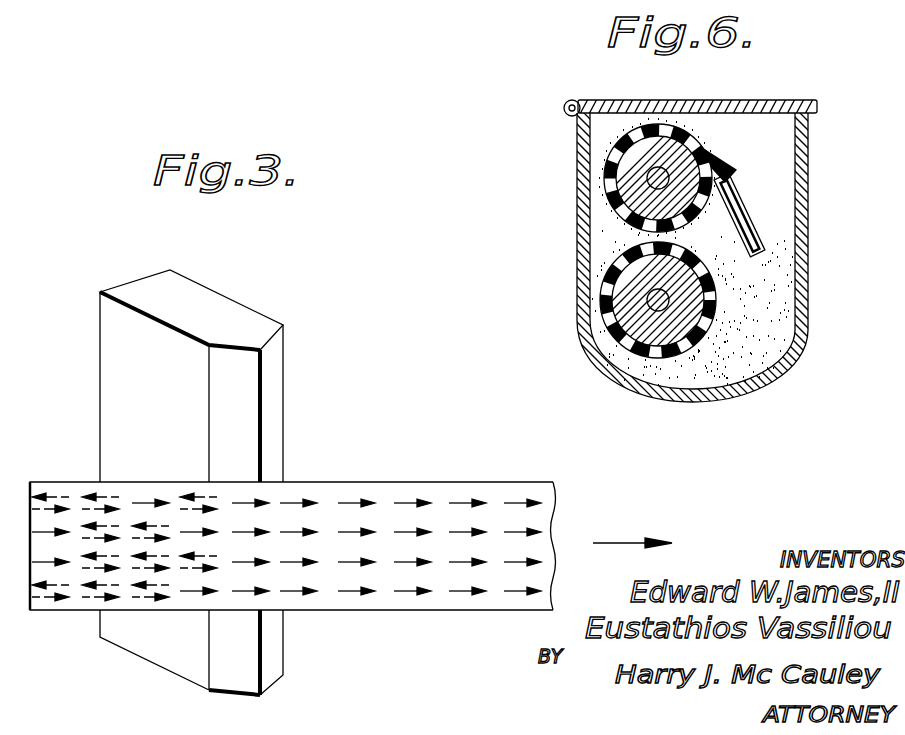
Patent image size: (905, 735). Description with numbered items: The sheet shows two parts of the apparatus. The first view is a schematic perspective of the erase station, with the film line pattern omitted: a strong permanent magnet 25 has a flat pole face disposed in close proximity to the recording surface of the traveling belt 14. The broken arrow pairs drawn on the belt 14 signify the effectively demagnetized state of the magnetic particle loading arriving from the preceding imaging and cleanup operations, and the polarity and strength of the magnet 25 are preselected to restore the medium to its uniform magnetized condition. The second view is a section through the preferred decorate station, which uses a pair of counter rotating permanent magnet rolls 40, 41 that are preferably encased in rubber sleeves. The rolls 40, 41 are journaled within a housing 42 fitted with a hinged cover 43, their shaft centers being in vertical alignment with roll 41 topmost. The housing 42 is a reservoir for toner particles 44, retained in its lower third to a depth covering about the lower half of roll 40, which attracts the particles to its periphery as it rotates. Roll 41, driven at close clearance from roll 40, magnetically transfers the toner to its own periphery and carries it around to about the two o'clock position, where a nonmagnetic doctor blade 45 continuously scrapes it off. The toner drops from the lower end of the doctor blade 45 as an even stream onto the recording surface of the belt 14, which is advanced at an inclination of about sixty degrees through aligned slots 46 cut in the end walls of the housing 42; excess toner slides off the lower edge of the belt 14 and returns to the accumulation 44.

In FIG. 3, the belt 14 is at (462, 482).
In FIG. 6, the belt 14 is at (747, 195).
In FIG. 3, the permanent magnet 25 is at (168, 420).
In FIG. 6, the permanent magnet roll 40 is at (623, 300).
In FIG. 6, the permanent magnet roll 41 is at (625, 185).
In FIG. 6, the housing 42 is at (808, 297).
In FIG. 6, the hinged cover 43 is at (767, 101).
In FIG. 6, the toner particles 44 is at (770, 347).
In FIG. 6, the doctor blade 45 is at (727, 161).
In FIG. 6, the slots 46 is at (760, 233).